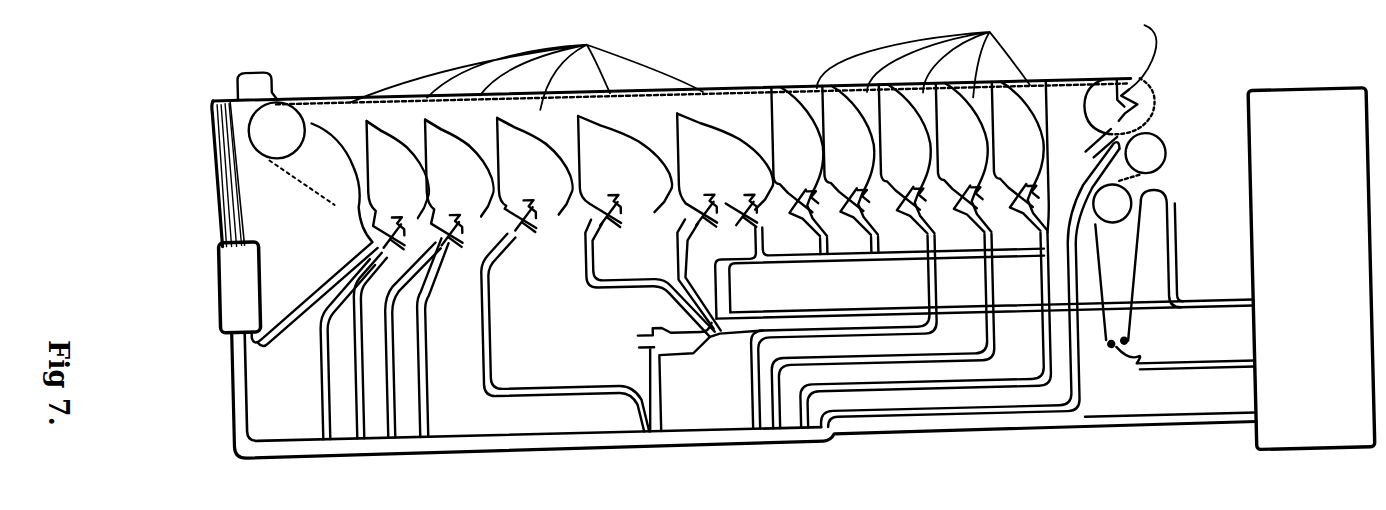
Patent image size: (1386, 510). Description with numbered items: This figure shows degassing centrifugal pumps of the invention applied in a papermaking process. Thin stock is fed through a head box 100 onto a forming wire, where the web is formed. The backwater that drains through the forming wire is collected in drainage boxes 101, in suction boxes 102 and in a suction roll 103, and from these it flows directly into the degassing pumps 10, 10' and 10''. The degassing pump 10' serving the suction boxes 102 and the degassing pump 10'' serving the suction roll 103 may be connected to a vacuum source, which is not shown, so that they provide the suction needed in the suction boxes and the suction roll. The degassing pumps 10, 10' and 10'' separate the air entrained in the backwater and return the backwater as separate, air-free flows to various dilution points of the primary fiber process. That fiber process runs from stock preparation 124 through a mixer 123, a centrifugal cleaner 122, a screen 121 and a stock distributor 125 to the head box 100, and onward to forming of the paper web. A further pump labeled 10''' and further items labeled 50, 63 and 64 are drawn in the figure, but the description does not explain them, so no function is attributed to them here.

The degassing pump 10 is at (571, 180).
The degassing pump 10' is at (909, 159).
The degassing pump 10'' is at (1120, 118).
The valve unit 10''' is at (666, 320).
The channel 50 is at (738, 291).
The channel 63 is at (949, 300).
The channel 64 is at (702, 381).
The head box 100 is at (267, 88).
The drainage boxes 101 is at (588, 53).
The suction boxes 102 is at (991, 50).
The suction roll 103 is at (1132, 53).
The screen 121 is at (221, 288).
The centrifugal cleaner 122 is at (744, 398).
The mixer 123 is at (534, 402).
The stock preparation 124 is at (1311, 270).
The stock distributor 125 is at (212, 173).